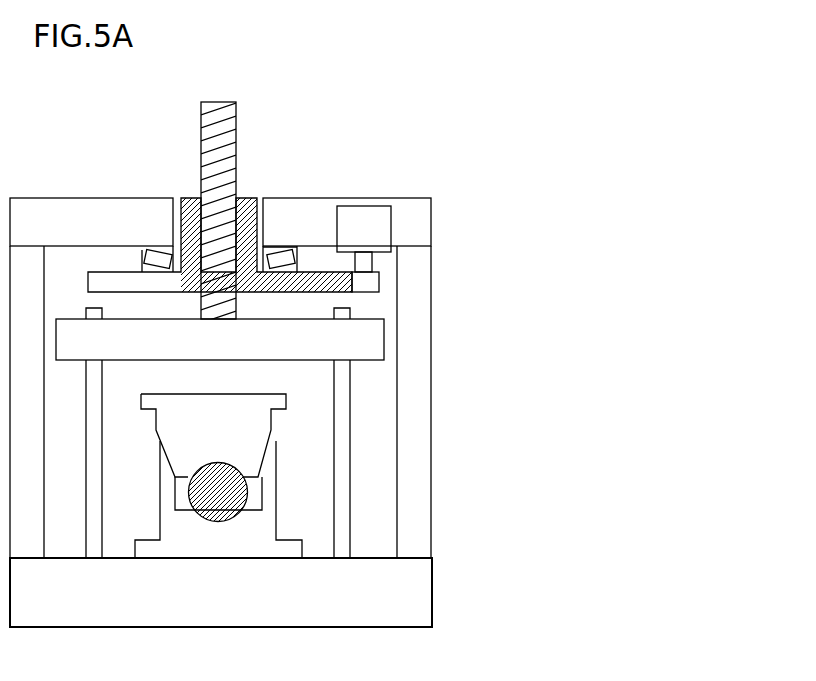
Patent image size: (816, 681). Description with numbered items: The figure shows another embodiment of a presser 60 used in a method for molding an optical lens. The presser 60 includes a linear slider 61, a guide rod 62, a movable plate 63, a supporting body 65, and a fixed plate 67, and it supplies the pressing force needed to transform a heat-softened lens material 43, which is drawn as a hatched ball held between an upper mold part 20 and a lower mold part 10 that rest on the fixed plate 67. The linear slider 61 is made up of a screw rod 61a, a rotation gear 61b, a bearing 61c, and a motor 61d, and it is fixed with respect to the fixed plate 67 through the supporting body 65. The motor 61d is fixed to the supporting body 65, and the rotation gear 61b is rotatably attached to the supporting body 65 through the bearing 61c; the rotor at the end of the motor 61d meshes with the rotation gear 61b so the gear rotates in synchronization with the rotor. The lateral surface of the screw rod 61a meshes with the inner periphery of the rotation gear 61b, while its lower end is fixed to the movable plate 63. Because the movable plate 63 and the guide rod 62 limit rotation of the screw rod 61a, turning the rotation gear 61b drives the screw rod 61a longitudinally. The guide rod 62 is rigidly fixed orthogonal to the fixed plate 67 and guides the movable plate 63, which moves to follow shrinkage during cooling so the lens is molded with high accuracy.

The presser 60 is at (286, 71).
The linear slider 61 is at (439, 206).
The screw rod 61a is at (236, 149).
The rotation gear 61b is at (257, 198).
The bearing 61c is at (285, 250).
The motor 61d is at (392, 228).
The movable plate 63 is at (384, 340).
The supporting body 65 is at (431, 405).
The guide rod 62 is at (350, 435).
The fixed plate 67 is at (432, 588).
The upper holder 20 is at (227, 417).
The lower holder 10 is at (244, 535).
The lens material 43 is at (212, 500).